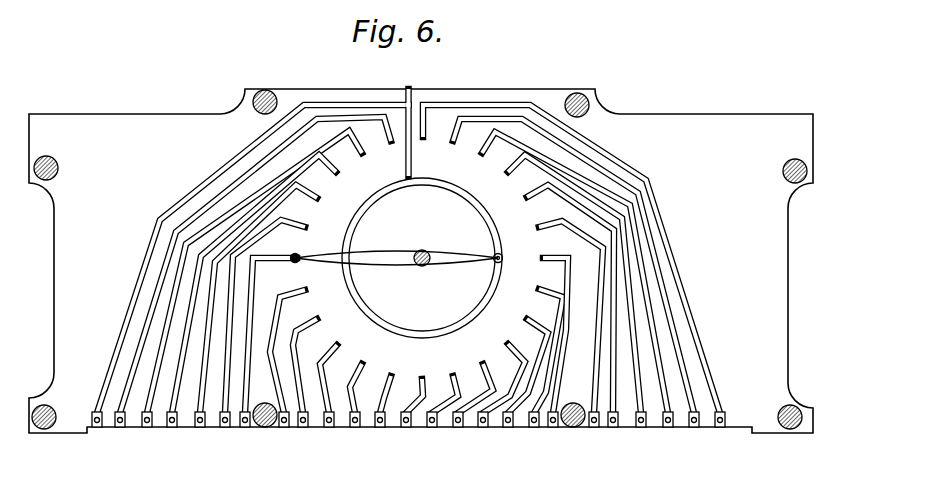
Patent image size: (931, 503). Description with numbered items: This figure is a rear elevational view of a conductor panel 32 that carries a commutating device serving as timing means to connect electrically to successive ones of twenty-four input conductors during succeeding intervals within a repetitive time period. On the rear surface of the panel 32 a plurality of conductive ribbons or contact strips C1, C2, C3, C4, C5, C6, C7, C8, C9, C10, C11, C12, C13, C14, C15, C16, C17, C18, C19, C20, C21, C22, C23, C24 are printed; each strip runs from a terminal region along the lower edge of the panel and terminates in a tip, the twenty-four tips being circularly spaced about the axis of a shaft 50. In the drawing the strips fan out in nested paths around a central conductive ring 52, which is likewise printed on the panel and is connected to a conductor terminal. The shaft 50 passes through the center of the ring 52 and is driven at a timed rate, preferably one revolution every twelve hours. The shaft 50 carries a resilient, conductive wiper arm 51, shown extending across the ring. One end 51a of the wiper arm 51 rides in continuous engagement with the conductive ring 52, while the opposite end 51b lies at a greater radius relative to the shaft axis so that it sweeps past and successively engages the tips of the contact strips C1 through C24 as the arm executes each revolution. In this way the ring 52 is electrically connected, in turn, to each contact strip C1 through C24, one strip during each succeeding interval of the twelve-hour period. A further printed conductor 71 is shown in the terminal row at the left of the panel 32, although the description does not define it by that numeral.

The panel 32 is at (676, 128).
The conductive ring 52 is at (441, 183).
The wiper arm 51 is at (379, 250).
The shaft 50 is at (430, 252).
The end of wiper arm 51a is at (502, 254).
The opposite end of wiper arm 51b is at (302, 251).
The common terminal 71 is at (95, 429).
The contact strip C1 is at (404, 429).
The contact strip C2 is at (378, 429).
The contact strip C3 is at (353, 429).
The contact strip C4 is at (327, 429).
The contact strip C5 is at (301, 429).
The contact strip C6 is at (282, 429).
The contact strip C7 is at (243, 429).
The contact strip C8 is at (223, 429).
The contact strip C9 is at (198, 429).
The contact strip C10 is at (170, 429).
The contact strip C11 is at (145, 429).
The contact strip C12 is at (118, 429).
The contact strip C13 is at (718, 429).
The contact strip C14 is at (692, 429).
The contact strip C15 is at (666, 429).
The contact strip C16 is at (639, 429).
The contact strip C17 is at (611, 429).
The contact strip C18 is at (592, 429).
The contact strip C19 is at (551, 429).
The contact strip C20 is at (532, 429).
The contact strip C21 is at (506, 429).
The contact strip C22 is at (481, 429).
The contact strip C23 is at (456, 429).
The contact strip C24 is at (430, 429).